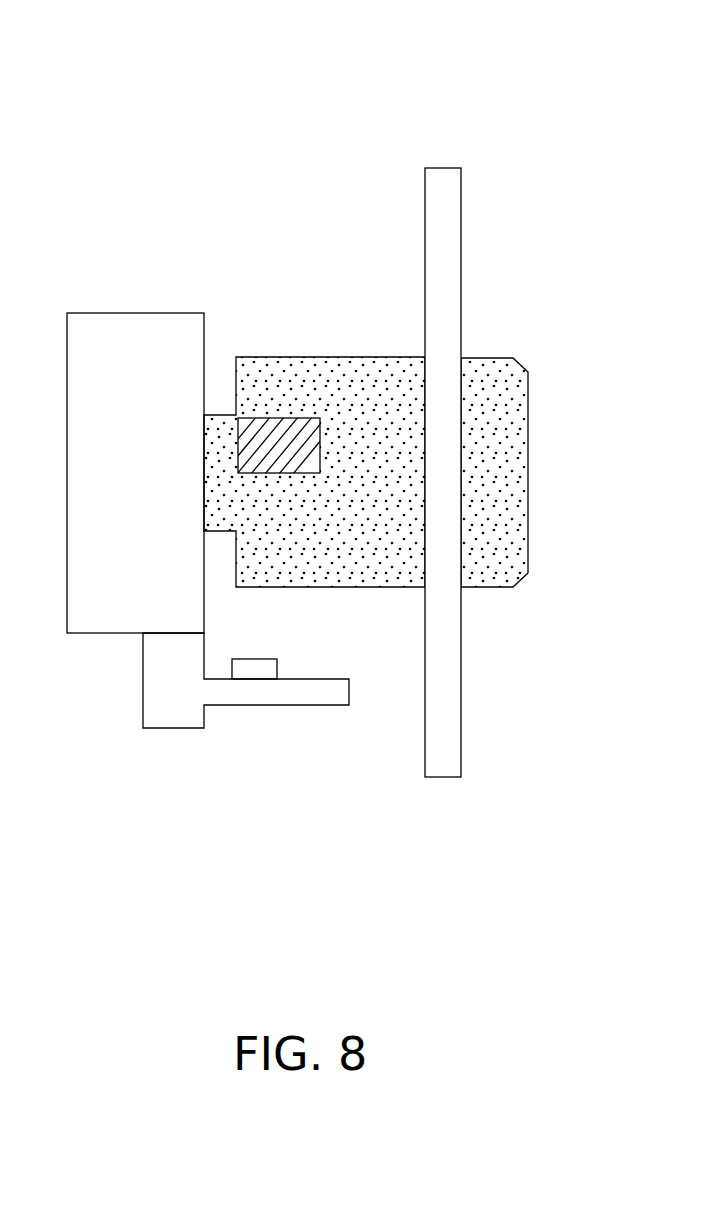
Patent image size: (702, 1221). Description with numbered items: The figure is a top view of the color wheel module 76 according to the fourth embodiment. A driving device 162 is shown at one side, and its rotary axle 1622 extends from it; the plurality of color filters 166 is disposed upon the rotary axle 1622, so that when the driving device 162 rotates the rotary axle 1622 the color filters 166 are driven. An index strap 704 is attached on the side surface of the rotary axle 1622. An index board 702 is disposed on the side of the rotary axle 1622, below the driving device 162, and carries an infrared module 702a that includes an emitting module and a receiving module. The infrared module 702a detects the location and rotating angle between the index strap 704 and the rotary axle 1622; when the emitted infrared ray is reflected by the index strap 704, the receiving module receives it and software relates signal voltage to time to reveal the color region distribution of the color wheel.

The color wheel module 76 is at (500, 80).
The driving device 162 is at (152, 495).
The rotary axle 1622 is at (378, 372).
The index strap 704 is at (253, 418).
The color filters 166 is at (440, 180).
The index board 702 is at (179, 717).
The infrared module 702a is at (263, 670).